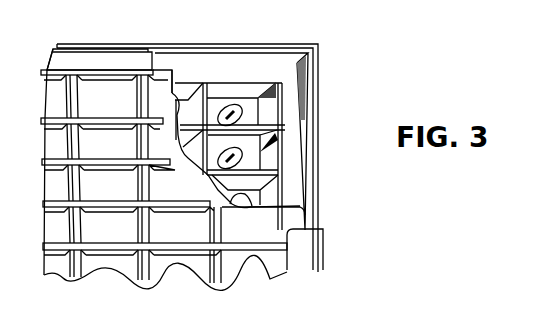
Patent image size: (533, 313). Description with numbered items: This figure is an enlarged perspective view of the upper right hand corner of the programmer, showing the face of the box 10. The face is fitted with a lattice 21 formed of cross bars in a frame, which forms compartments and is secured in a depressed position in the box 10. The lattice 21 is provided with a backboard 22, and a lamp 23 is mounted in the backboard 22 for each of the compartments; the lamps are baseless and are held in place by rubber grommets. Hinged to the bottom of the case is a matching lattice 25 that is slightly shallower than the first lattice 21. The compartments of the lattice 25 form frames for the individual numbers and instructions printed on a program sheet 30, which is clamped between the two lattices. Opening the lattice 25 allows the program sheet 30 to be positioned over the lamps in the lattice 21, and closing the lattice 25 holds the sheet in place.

The box 10 is at (318, 89).
The lattice 21 is at (251, 83).
The backboard 22 is at (252, 118).
The lamp 23 is at (231, 107).
The matching lattice 25 is at (101, 53).
The program sheet 30 is at (261, 235).